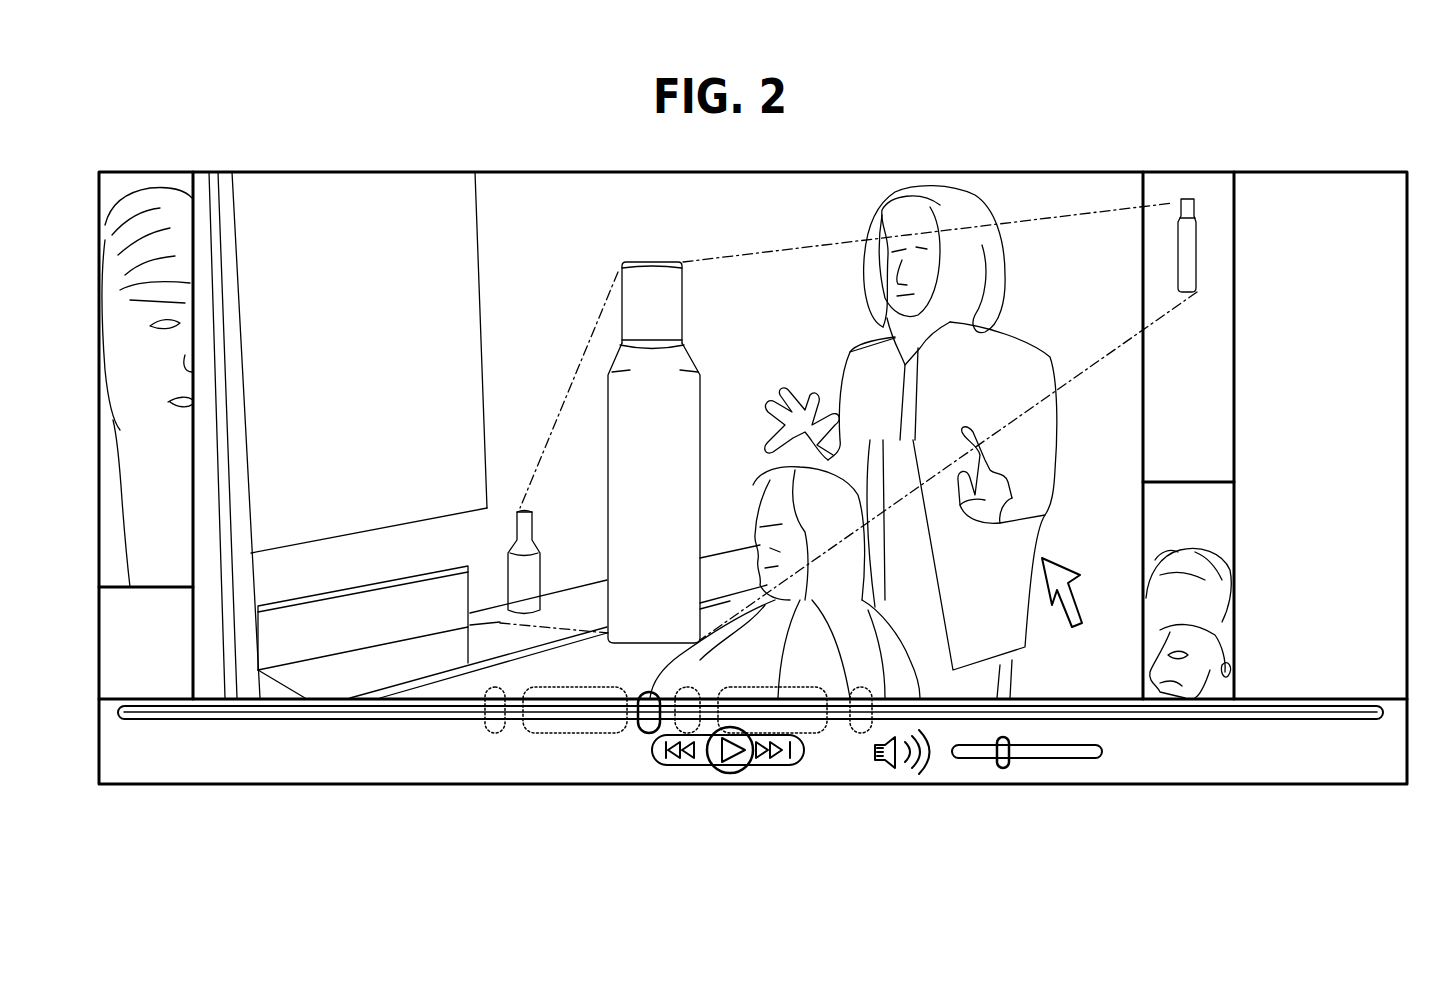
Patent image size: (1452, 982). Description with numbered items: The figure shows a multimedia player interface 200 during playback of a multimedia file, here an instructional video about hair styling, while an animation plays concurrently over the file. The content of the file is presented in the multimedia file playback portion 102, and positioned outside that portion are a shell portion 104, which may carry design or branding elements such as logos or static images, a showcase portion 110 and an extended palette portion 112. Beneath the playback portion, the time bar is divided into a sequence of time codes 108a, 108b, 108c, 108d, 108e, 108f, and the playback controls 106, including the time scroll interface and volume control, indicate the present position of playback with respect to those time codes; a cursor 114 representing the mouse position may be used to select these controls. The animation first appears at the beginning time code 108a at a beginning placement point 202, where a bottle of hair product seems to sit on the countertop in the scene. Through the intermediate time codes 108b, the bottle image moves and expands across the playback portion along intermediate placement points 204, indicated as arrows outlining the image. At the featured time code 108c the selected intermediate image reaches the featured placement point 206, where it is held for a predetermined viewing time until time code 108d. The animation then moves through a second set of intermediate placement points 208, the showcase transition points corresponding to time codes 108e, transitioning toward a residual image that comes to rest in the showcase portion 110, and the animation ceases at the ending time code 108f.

The multimedia player interface 200 is at (995, 128).
The multimedia file playback portion 102 is at (753, 476).
The shell portion 104 is at (135, 185).
The playback controls 106 is at (728, 772).
The beginning time code 108a is at (492, 733).
The intermediate time codes 108b is at (563, 738).
The featured time code 108c is at (652, 735).
The time code 108d is at (722, 735).
The second set of intermediate time codes 108e is at (829, 736).
The ending time code 108f is at (858, 736).
The showcase portion 110 is at (1205, 185).
The extended palette portion 112 is at (1355, 190).
The cursor 114 is at (1082, 601).
The beginning placement point 202 is at (517, 505).
The intermediate placement points 204 is at (557, 388).
The featured placement point 206 is at (647, 270).
The second set of intermediate placement points 208 is at (1088, 200).